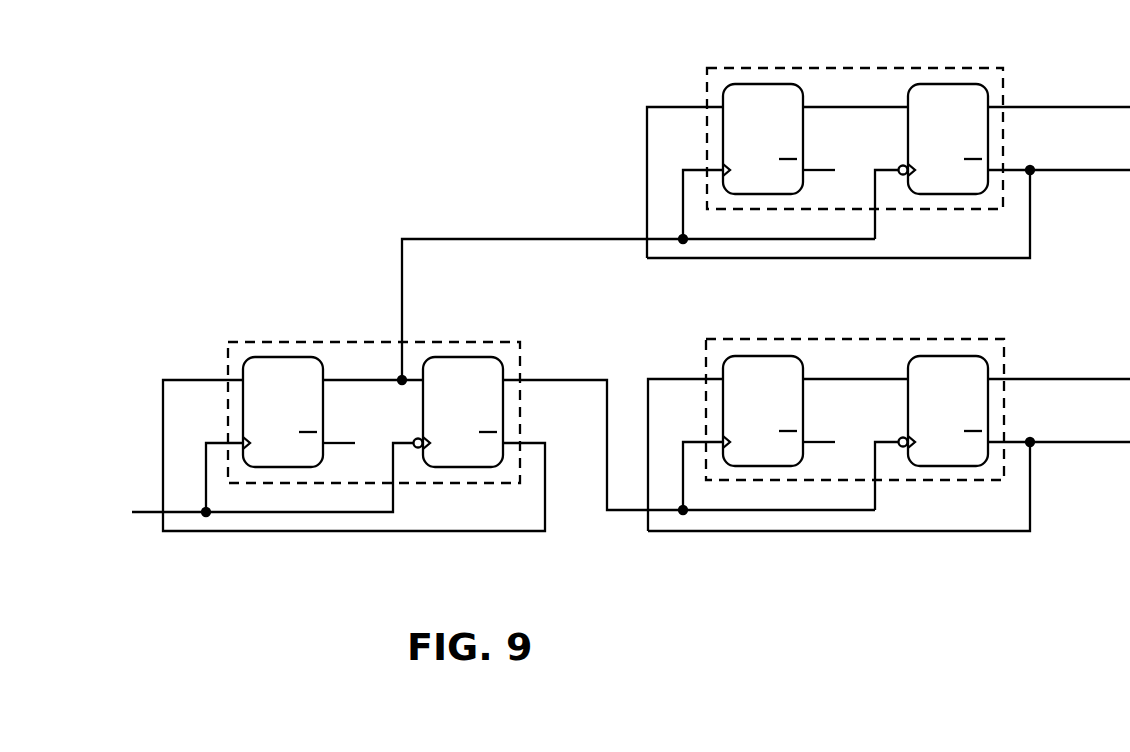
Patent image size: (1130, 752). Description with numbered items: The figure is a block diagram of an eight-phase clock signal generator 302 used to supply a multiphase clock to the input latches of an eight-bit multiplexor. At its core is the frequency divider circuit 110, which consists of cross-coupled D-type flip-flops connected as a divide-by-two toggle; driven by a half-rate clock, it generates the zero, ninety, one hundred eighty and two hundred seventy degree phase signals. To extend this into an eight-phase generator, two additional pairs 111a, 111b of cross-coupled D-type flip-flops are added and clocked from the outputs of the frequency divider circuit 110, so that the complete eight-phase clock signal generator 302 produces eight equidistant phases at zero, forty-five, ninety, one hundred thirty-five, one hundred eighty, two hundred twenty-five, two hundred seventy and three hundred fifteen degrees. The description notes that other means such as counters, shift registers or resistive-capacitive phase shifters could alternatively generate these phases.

The frequency divider circuit 110 is at (318, 342).
The pair of cross-coupled D-type flip-flops 111a is at (800, 68).
The pair of cross-coupled D-type flip-flops 111b is at (805, 339).
The eight-phase clock signal generator 302 is at (780, 605).